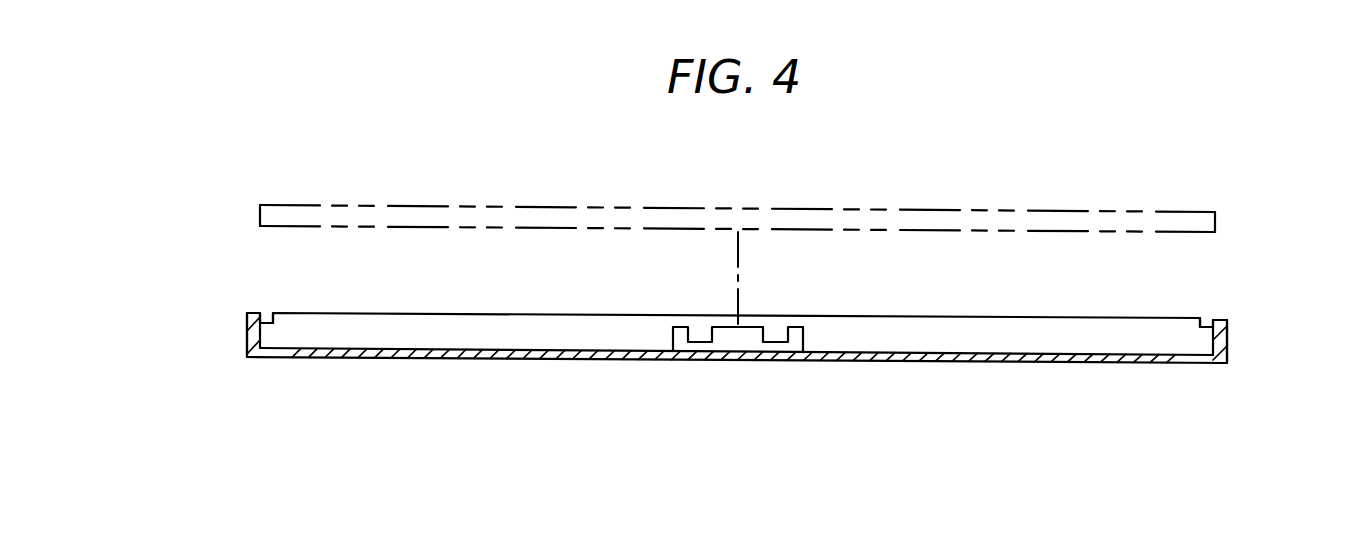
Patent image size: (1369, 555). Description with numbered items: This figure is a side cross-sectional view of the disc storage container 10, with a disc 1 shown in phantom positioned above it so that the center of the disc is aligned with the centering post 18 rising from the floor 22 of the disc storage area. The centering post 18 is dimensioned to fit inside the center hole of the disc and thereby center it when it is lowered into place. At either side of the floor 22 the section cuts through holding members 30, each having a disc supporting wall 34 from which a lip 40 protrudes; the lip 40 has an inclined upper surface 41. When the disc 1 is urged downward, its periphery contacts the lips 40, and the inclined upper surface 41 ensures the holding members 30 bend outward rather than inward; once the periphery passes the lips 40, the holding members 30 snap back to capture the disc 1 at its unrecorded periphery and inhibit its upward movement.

The disc 1 is at (557, 217).
The disc storage container 10 is at (235, 260).
The centering post 18 is at (680, 343).
The floor 22 is at (512, 358).
The holding member 30 is at (1230, 327).
The disc supporting wall 34 is at (247, 340).
The lip 40 is at (263, 316).
The inclined upper surface 41 is at (1203, 320).